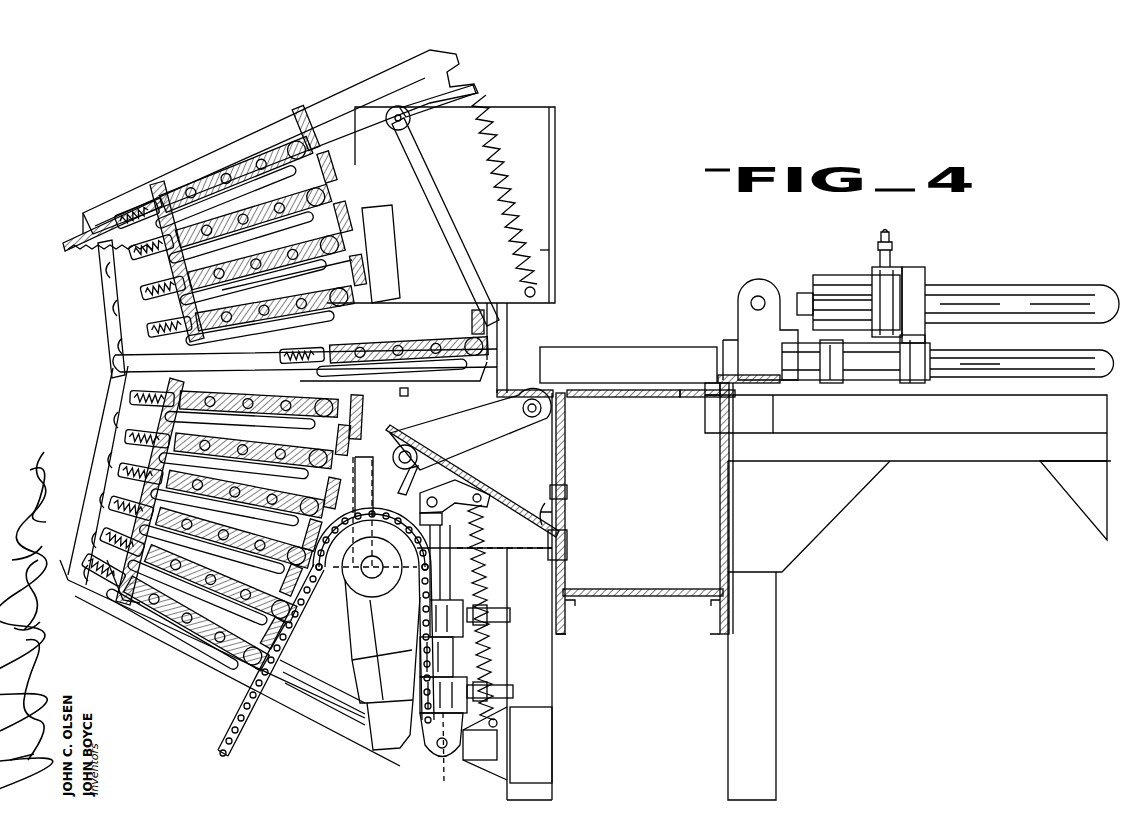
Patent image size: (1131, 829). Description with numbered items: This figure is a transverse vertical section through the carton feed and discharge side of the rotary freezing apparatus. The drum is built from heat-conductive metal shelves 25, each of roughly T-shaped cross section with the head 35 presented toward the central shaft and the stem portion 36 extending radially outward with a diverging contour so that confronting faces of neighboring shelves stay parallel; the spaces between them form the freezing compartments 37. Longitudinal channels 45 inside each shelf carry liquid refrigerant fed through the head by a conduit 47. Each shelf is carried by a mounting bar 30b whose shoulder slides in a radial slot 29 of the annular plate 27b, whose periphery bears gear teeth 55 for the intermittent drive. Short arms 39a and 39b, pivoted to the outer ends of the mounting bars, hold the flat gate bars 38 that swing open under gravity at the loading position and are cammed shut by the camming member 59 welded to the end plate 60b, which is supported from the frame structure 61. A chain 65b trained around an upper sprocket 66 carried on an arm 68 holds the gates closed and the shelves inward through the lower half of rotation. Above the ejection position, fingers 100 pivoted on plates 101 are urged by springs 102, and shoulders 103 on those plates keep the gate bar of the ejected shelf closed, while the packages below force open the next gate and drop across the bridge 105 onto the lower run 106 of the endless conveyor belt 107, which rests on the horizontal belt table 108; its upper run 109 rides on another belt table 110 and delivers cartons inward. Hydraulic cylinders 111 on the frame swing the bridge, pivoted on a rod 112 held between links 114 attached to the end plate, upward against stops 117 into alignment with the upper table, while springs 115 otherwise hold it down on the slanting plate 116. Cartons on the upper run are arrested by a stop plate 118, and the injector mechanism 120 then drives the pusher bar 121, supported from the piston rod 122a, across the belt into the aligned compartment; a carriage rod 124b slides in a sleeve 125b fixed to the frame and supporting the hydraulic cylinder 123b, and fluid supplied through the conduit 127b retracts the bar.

The shelf 25 is at (281, 391).
The annular plate 27b is at (120, 405).
The radial slot 29 is at (115, 342).
The mounting bar 30b is at (125, 440).
The head of the T 35 is at (157, 183).
The stem portion 36 is at (278, 150).
The freezing compartment 37 is at (168, 655).
The gate bar 38 is at (302, 107).
The short arm 39a is at (490, 340).
The short arm 39b is at (340, 185).
The longitudinal channel 45 is at (353, 275).
The conduit 47 is at (97, 253).
The gear teeth 55 is at (425, 762).
The camming member 59 is at (470, 482).
The end plate 60b is at (540, 512).
The frame structure 61 is at (752, 673).
The chain 65b is at (233, 727).
The upper sprocket 66 is at (338, 595).
The arm 68 is at (380, 740).
The finger 100 is at (520, 243).
The plate 101 is at (537, 251).
The spring 102 is at (510, 197).
The shoulder 103 is at (468, 258).
The bridge 105 is at (493, 498).
The lower run 106 is at (662, 582).
The endless conveyor belt 107 is at (691, 572).
The horizontal belt table 108 is at (606, 603).
The upper run 109 is at (697, 385).
The belt table 110 is at (648, 398).
The hydraulic cylinder 111 is at (428, 542).
The rod 112 is at (435, 462).
The link 114 is at (510, 427).
The spring 115 is at (500, 577).
The slanting plate 116 is at (566, 499).
The stop 117 is at (412, 392).
The stop plate 118 is at (662, 375).
The injector mechanism 120 is at (957, 283).
The pusher bar 121 is at (750, 390).
The piston rod 122a is at (808, 293).
The hydraulic cylinder 123b is at (1085, 272).
The carriage rod 124b is at (1092, 348).
The sleeve 125b is at (877, 380).
The conduit 127b is at (923, 228).